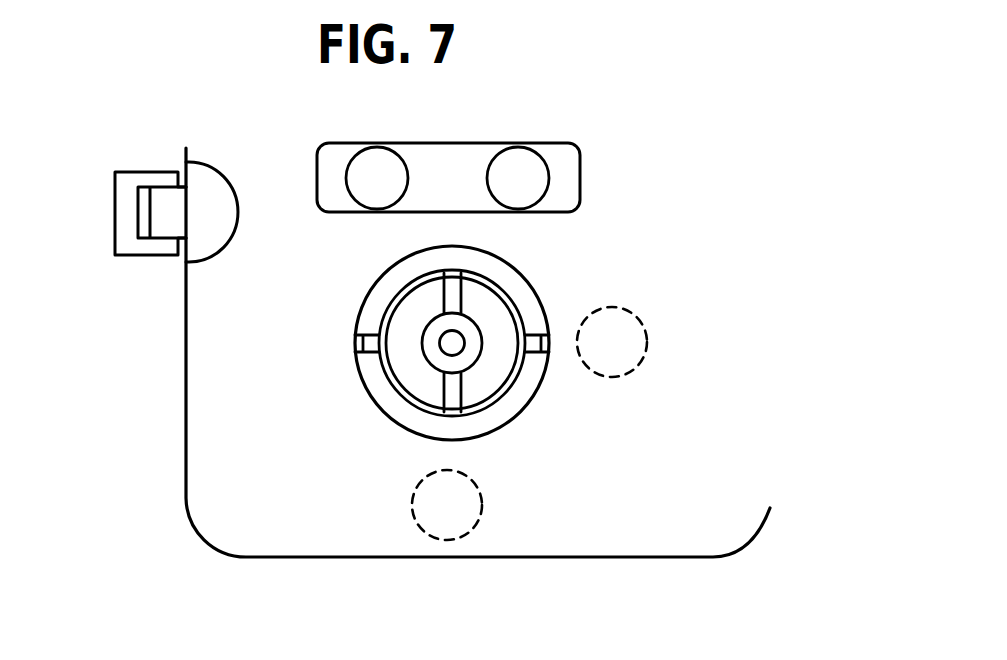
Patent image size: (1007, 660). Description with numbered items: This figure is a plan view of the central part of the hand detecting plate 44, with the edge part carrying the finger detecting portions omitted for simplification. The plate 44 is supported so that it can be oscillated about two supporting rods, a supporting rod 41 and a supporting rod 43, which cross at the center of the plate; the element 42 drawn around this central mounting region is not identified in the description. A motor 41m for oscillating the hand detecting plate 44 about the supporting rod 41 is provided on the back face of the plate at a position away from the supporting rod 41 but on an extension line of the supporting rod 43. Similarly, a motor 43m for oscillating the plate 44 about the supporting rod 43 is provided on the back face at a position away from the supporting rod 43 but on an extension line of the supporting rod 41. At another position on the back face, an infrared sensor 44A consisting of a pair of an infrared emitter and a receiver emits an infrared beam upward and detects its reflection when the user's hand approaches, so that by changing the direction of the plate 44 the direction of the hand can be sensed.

The supporting rod 41 is at (452, 293).
The motor 41m is at (640, 351).
The knob ring 42 is at (395, 392).
The supporting rod 43 is at (537, 345).
The motor 43m is at (478, 508).
The hand detecting plate 44 is at (203, 383).
The infrared sensor 44A is at (568, 178).